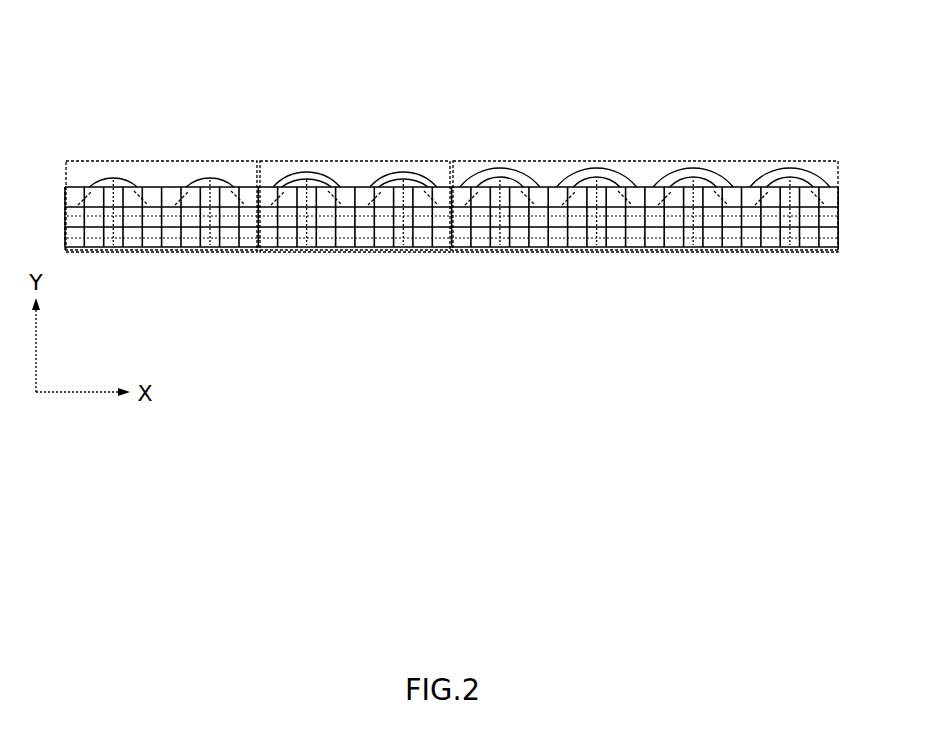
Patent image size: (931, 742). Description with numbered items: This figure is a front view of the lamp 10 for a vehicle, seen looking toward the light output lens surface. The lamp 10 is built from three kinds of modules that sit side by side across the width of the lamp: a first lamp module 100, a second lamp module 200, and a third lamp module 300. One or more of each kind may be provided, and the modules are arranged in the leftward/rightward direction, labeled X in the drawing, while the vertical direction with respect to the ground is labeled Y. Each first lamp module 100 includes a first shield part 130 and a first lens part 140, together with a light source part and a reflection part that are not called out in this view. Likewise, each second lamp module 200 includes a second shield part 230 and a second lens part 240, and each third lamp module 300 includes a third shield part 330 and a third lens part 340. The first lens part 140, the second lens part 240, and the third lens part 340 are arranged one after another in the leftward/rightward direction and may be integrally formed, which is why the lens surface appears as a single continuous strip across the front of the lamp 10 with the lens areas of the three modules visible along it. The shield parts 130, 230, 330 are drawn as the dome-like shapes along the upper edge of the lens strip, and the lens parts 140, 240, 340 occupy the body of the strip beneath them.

The lamp for a vehicle 10 is at (100, 65).
The first lamp module 100 is at (88, 161).
The first shield part 130 is at (210, 179).
The first lens part 140 is at (128, 244).
The second lamp module 200 is at (284, 161).
The second shield part 230 is at (403, 172).
The second lens part 240 is at (322, 244).
The third lamp module 300 is at (645, 161).
The third shield part 330 is at (790, 168).
The third lens part 340 is at (525, 245).